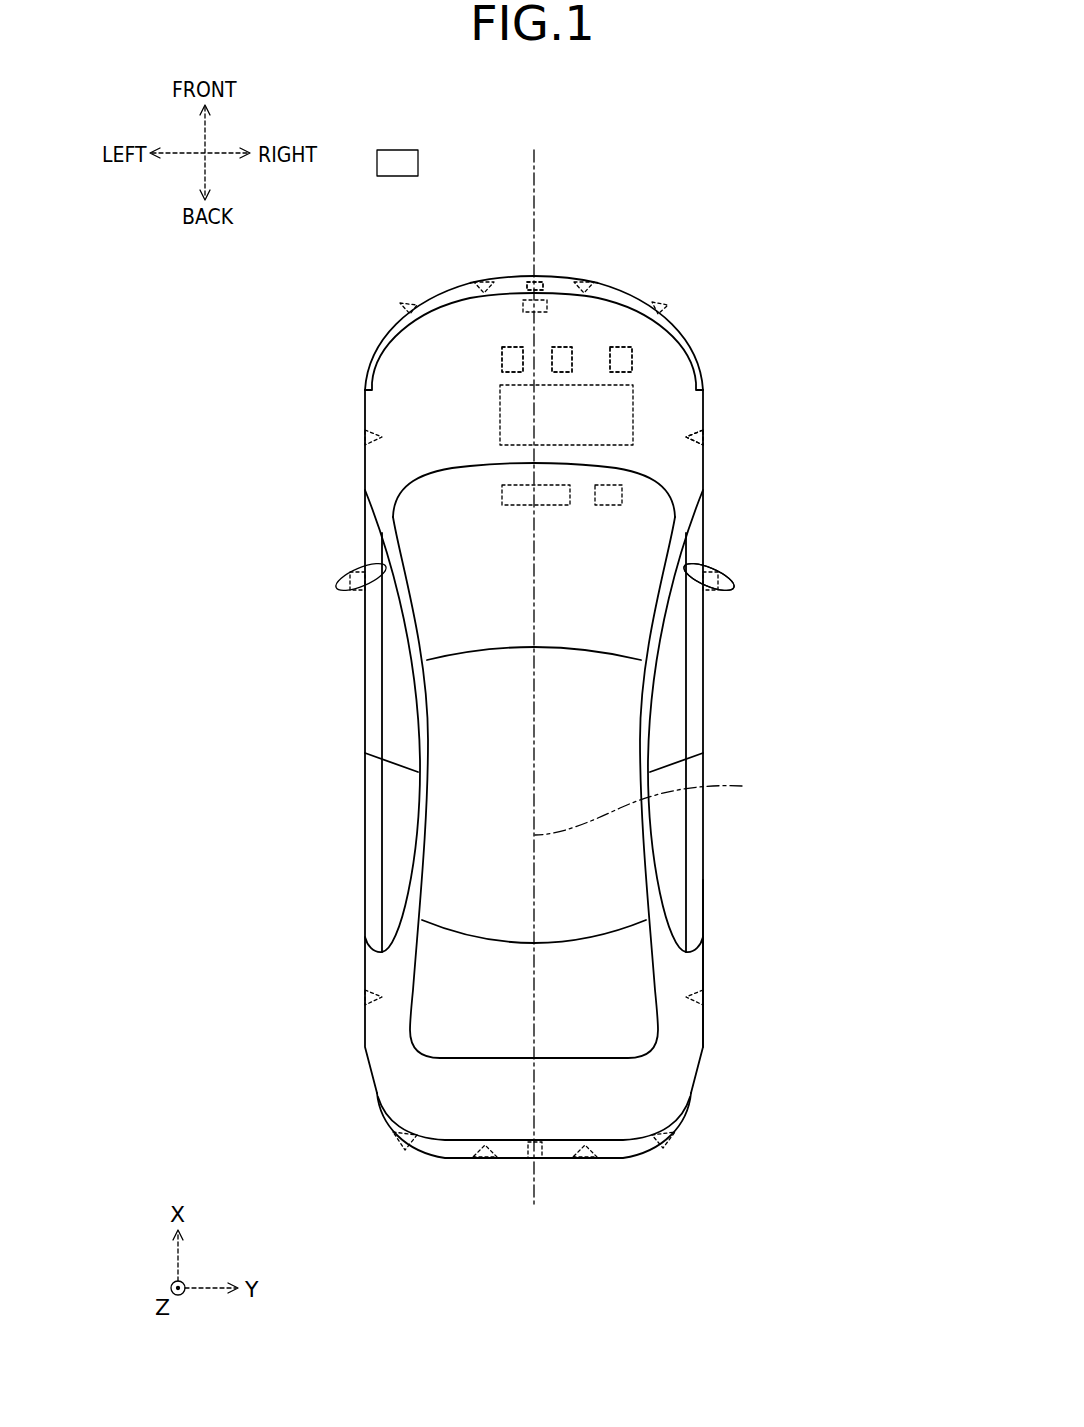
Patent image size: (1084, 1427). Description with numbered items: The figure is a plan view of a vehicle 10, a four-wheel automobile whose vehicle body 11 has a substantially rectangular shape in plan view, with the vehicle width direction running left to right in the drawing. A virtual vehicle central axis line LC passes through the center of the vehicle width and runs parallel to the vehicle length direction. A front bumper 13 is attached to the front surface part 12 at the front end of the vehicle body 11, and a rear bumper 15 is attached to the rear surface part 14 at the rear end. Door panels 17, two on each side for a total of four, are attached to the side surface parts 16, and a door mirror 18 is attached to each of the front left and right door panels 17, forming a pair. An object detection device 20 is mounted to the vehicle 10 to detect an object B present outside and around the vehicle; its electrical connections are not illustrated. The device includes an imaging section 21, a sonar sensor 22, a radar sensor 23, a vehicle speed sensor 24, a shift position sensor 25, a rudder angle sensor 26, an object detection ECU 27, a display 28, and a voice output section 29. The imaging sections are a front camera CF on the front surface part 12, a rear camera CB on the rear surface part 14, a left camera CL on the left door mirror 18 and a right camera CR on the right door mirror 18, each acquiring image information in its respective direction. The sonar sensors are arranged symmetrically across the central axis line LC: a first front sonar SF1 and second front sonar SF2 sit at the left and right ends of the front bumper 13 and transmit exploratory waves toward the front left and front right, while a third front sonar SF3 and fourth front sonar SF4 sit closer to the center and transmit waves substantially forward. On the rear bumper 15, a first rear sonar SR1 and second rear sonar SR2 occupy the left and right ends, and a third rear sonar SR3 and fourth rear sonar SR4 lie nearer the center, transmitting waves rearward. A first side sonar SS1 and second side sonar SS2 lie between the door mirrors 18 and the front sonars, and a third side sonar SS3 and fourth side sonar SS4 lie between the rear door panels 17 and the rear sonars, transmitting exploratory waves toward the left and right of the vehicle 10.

The vehicle 10 is at (845, 203).
The vehicle body 11 is at (693, 1048).
The front surface part 12 is at (617, 303).
The front bumper 13 is at (635, 297).
The rear surface part 14 is at (620, 1137).
The rear bumper 15 is at (682, 1120).
The side surface part 16 is at (705, 967).
The door panel 17 is at (372, 671).
The door mirror 18 is at (340, 582).
The object detection device 20 is at (442, 367).
The imaging section 21 is at (732, 572).
The sonar sensor 22 is at (727, 425).
The radar sensor 23 is at (513, 278).
The vehicle speed sensor 24 is at (565, 347).
The shift position sensor 25 is at (502, 352).
The rudder angle sensor 26 is at (633, 360).
The object detection ECU 27 is at (633, 445).
The display 28 is at (502, 494).
The voice output section 29 is at (622, 492).
The object B is at (408, 160).
The front camera CF is at (543, 280).
The rear camera CB is at (532, 1160).
The left camera CL is at (357, 597).
The right camera CR is at (712, 562).
The vehicle central axis line LC is at (655, 805).
The first front sonar SF1 is at (410, 306).
The second front sonar SF2 is at (667, 298).
The third front sonar SF3 is at (483, 276).
The fourth front sonar SF4 is at (585, 277).
The first side sonar SS1 is at (365, 437).
The second side sonar SS2 is at (703, 437).
The third side sonar SS3 is at (365, 997).
The fourth side sonar SS4 is at (703, 1000).
The first rear sonar SR1 is at (392, 1160).
The second rear sonar SR2 is at (680, 1160).
The third rear sonar SR3 is at (490, 1160).
The fourth rear sonar SR4 is at (588, 1160).